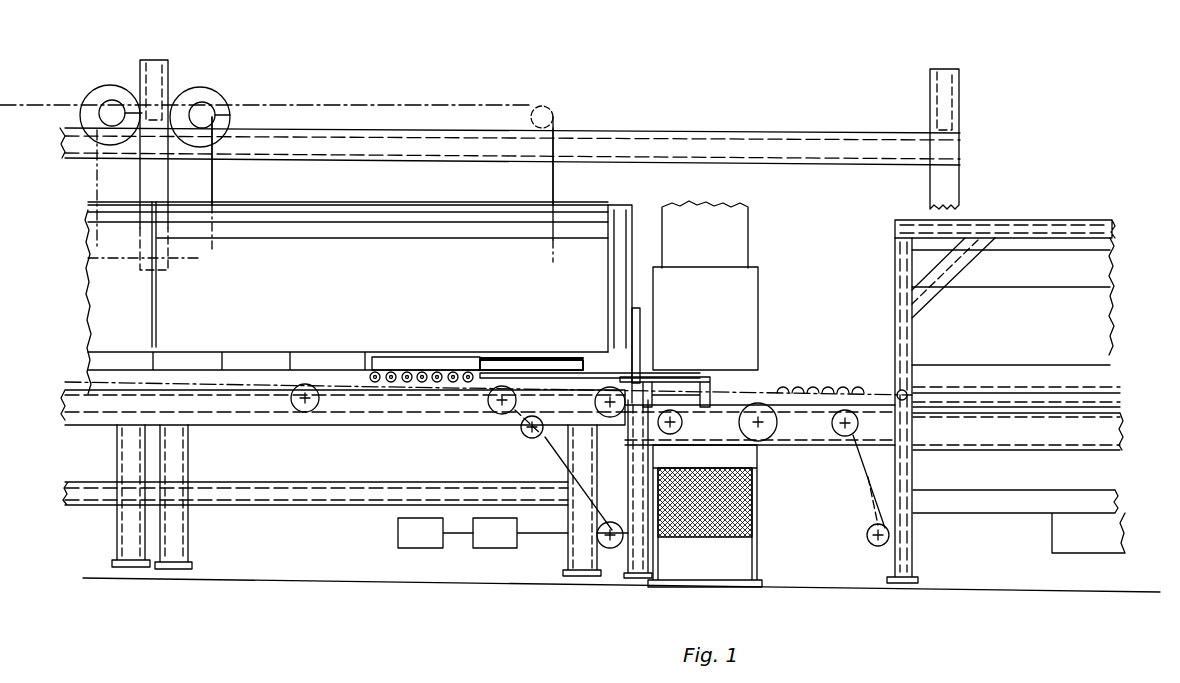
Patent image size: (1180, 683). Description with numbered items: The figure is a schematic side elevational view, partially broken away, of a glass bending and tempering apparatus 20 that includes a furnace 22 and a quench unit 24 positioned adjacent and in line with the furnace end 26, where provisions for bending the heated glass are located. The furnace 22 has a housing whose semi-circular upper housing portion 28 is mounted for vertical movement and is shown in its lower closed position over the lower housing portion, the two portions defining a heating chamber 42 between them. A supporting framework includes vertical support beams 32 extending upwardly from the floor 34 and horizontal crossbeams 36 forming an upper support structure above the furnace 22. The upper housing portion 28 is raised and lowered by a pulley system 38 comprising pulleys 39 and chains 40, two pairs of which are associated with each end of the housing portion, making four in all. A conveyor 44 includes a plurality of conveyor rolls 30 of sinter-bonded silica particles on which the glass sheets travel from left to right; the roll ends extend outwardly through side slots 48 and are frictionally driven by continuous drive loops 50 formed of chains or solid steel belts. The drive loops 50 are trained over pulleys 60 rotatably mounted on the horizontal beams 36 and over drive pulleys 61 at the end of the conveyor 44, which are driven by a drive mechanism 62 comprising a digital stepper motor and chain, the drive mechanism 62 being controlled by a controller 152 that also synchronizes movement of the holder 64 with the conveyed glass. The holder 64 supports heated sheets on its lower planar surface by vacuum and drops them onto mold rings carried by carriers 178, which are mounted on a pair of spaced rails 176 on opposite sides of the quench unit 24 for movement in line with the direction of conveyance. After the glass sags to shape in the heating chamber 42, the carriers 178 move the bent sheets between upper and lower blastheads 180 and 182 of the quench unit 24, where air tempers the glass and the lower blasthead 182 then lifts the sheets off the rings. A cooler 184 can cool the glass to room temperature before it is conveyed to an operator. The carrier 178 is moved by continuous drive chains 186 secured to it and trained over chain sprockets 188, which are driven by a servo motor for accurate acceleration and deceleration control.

The glass bending and tempering apparatus 20 is at (758, 70).
The furnace 22 is at (480, 97).
The quench unit 24 is at (752, 183).
The furnace end 26 is at (530, 205).
The upper housing portion 28 is at (355, 213).
The conveyor rolls 30 is at (395, 370).
The vertical support beams 32 is at (168, 65).
The floor 34 is at (330, 580).
The horizontal crossbeams 36 is at (160, 100).
The pulley system 38 is at (558, 95).
The pulleys 39 is at (215, 97).
The chains 40 is at (215, 202).
The heating chamber 42 is at (258, 350).
The conveyor 44 is at (640, 515).
The side slots 48 is at (462, 360).
The continuous drive loops 50 is at (635, 335).
The pulleys 60 is at (312, 412).
The drive pulleys 61 is at (615, 550).
The drive mechanism 62 is at (503, 548).
The holder 64 is at (520, 350).
The controller 152 is at (403, 548).
The rails 176 is at (740, 395).
The carriers 178 is at (680, 375).
The upper blasthead 180 is at (748, 365).
The lower blasthead 182 is at (735, 442).
The cooler 184 is at (1068, 205).
The drive chains 186 is at (912, 480).
The chain sprockets 188 is at (830, 393).